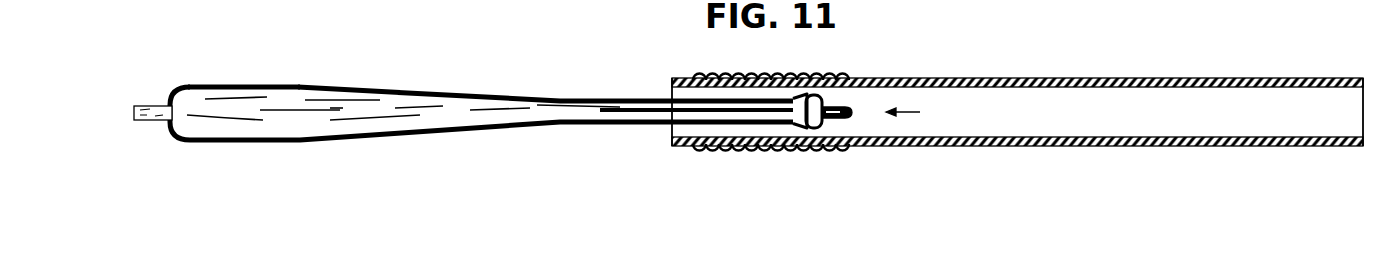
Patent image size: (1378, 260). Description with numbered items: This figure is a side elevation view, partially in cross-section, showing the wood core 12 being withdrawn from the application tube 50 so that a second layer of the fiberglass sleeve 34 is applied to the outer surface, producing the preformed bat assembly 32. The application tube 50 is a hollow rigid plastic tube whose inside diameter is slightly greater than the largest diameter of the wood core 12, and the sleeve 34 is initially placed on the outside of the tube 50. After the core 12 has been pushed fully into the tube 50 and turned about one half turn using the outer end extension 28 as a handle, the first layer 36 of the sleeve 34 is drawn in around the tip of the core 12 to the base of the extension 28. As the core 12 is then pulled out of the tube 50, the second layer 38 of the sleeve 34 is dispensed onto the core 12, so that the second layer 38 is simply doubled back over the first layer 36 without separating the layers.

The wood core 12 is at (303, 127).
The outer end extension 28 is at (150, 105).
The preformed bat assembly 32 is at (240, 78).
The fabric sleeve 34 is at (773, 74).
The first layer 36 is at (347, 88).
The second layer 38 is at (430, 95).
The application tube 50 is at (987, 101).